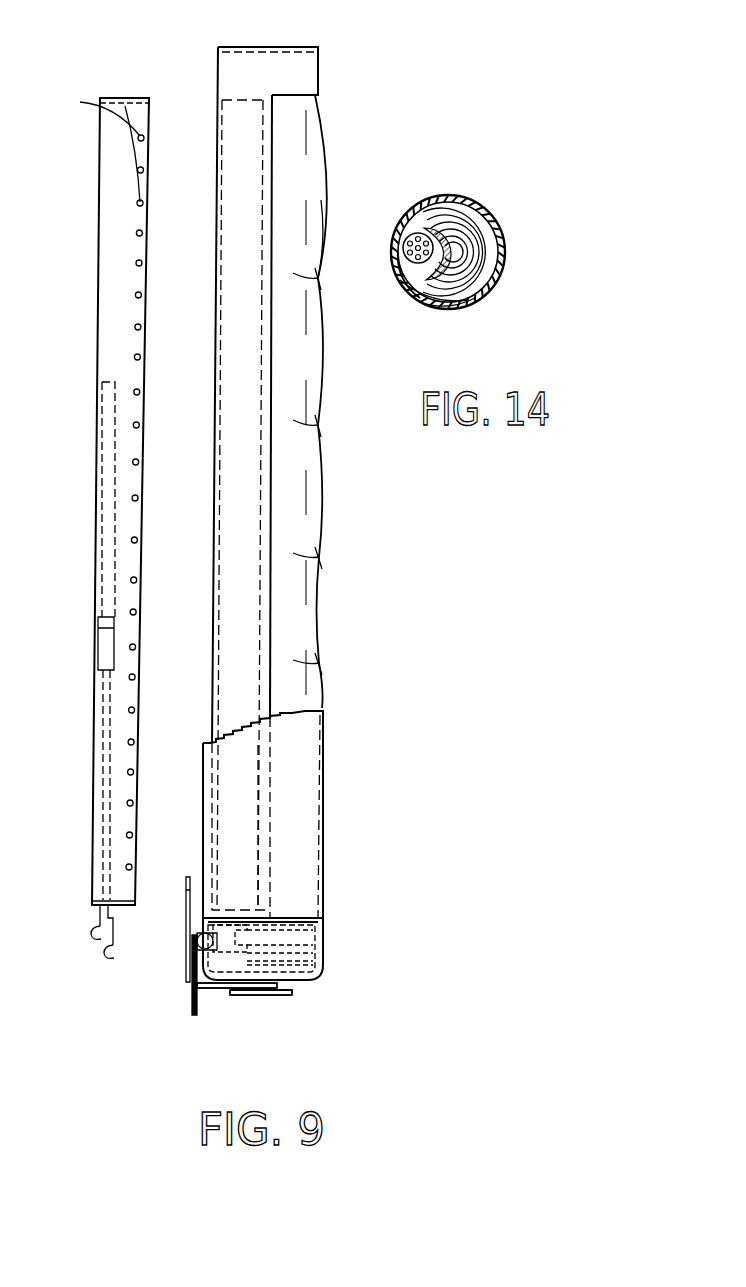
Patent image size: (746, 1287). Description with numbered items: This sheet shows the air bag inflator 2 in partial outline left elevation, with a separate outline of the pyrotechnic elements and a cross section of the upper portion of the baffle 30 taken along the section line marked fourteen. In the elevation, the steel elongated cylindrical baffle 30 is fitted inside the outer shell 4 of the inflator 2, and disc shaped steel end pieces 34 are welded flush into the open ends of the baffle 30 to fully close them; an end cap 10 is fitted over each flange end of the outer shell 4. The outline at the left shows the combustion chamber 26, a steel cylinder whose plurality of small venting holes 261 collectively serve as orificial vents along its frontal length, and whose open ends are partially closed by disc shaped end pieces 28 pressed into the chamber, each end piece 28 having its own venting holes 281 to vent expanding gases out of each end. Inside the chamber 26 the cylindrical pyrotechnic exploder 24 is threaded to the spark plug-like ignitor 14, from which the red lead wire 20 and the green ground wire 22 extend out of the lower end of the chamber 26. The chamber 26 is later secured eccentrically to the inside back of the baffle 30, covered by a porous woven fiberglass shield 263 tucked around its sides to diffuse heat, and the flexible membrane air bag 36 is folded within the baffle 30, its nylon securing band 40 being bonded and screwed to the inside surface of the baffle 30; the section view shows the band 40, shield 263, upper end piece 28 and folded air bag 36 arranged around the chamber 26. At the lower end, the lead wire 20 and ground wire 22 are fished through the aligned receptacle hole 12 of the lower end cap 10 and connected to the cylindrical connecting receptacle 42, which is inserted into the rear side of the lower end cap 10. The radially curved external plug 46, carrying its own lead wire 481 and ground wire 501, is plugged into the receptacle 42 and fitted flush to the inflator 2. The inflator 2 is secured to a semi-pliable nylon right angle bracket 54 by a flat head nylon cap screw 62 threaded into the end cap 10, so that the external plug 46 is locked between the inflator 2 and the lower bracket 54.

In FIG. 9, the inflator 2 is at (342, 796).
In FIG. 9, the outer shell 4 is at (335, 890).
In FIG. 9, the end cap 10 is at (332, 958).
In FIG. 9, the receptacle hole 12 is at (70, 365).
In FIG. 9, the ignitor 14 is at (97, 653).
In FIG. 9, the lead wire 20 is at (99, 921).
In FIG. 9, the ground wire 22 is at (110, 940).
In FIG. 9, the exploder 24 is at (97, 593).
In FIG. 9, the combustion chamber 26 is at (97, 157).
In FIG. 14, the combustion chamber 26 is at (415, 228).
In FIG. 9, the venting holes 261 is at (81, 141).
In FIG. 14, the fiberglass shield 263 is at (432, 222).
In FIG. 9, the end piece 28 is at (148, 125).
In FIG. 14, the end piece 28 is at (393, 268).
In FIG. 14, the venting holes 281 is at (425, 302).
In FIG. 9, the baffle 30 is at (278, 517).
In FIG. 14, the baffle 30 is at (505, 218).
In FIG. 9, the end piece 34 is at (250, 36).
In FIG. 9, the air bag 36 is at (340, 720).
In FIG. 14, the air bag 36 is at (475, 266).
In FIG. 14, the securing band 40 is at (472, 303).
In FIG. 9, the connecting receptacle 42 is at (328, 965).
In FIG. 9, the external plug 46 is at (202, 944).
In FIG. 9, the lead wire 481 is at (197, 1016).
In FIG. 9, the ground wire 501 is at (290, 1000).
In FIG. 9, the right angle bracket 54 is at (186, 990).
In FIG. 9, the cap screw 62 is at (286, 998).